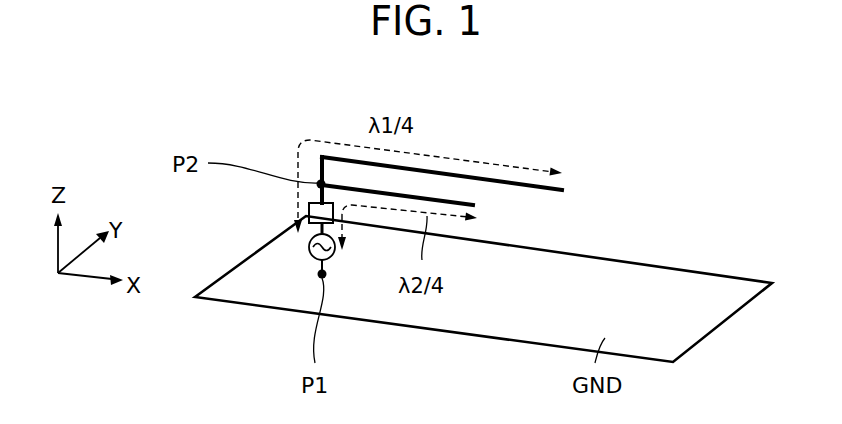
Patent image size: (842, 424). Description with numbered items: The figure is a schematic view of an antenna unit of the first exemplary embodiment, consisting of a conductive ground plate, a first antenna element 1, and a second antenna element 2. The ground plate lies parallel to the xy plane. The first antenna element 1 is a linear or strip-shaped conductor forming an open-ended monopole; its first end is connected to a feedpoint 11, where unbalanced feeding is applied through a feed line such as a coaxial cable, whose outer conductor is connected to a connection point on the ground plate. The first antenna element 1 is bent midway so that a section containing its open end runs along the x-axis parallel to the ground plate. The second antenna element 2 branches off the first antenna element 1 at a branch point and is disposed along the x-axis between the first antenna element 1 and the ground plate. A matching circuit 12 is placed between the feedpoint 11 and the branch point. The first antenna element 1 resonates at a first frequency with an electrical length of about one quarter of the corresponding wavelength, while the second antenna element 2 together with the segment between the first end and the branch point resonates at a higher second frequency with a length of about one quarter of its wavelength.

The first antenna element 1 is at (342, 157).
The second antenna element 2 is at (450, 202).
The feedpoint 11 is at (309, 247).
The matching circuit 12 is at (308, 208).